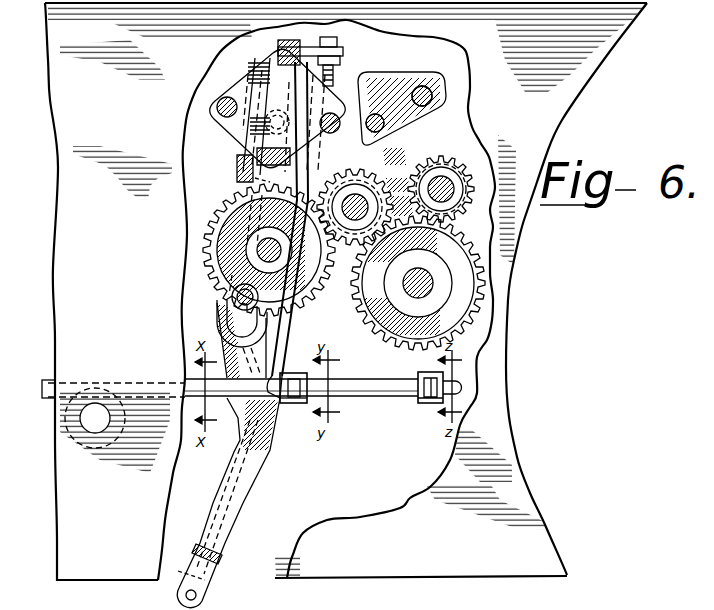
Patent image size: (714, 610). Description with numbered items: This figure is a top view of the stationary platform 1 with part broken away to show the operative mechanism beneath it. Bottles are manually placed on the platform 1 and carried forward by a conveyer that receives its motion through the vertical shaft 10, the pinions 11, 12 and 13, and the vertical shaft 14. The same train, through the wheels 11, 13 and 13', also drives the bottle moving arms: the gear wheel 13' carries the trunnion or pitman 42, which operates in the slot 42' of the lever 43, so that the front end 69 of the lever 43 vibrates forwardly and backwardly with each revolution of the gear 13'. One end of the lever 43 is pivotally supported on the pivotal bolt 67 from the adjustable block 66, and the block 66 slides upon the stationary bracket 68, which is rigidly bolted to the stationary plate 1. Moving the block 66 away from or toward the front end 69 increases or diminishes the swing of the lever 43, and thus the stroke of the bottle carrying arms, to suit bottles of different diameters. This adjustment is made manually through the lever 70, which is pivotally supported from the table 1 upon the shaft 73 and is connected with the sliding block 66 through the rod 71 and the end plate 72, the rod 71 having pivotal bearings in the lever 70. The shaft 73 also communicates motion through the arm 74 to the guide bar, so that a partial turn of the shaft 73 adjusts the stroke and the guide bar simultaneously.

The stationary platform 1 is at (505, 463).
The vertical shaft 10 is at (432, 294).
The pinion 11 is at (482, 288).
The pinion 12 is at (476, 184).
The pinion 13 is at (355, 198).
The gear wheel 13' is at (233, 250).
The vertical shaft 14 is at (447, 180).
The pitman (trunnion) 42 is at (201, 316).
The slot 42' is at (231, 190).
The lever 43 is at (240, 457).
The adjustable block 66 is at (262, 58).
The pivotal bolt 67 is at (235, 142).
The stationary bracket 68 is at (318, 95).
The front end of lever 69 is at (210, 578).
The lever 70 is at (296, 404).
The rod 71 is at (283, 340).
The end plate 72 is at (318, 45).
The shaft 73 is at (385, 397).
The arm 74 is at (428, 405).